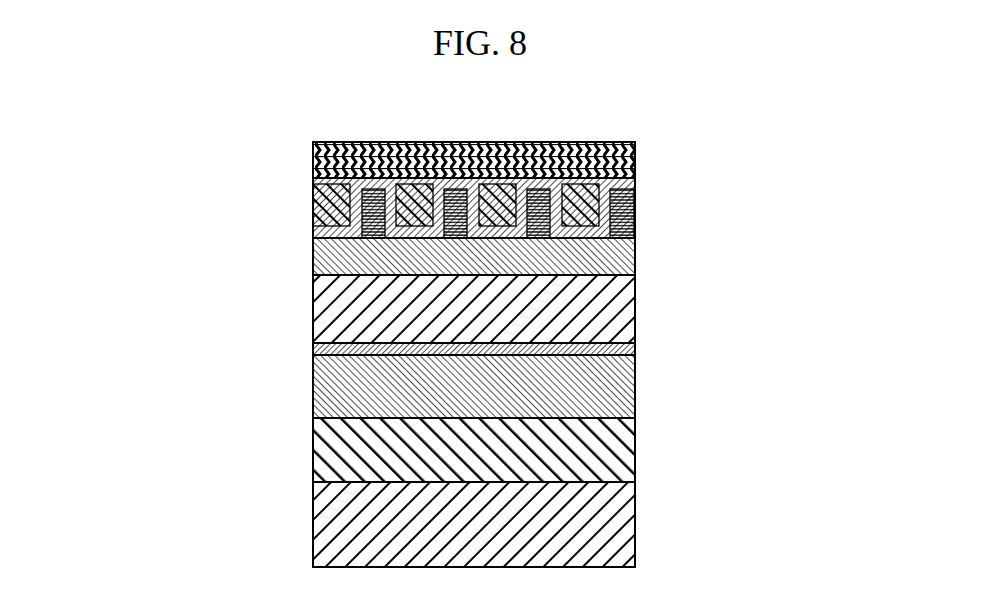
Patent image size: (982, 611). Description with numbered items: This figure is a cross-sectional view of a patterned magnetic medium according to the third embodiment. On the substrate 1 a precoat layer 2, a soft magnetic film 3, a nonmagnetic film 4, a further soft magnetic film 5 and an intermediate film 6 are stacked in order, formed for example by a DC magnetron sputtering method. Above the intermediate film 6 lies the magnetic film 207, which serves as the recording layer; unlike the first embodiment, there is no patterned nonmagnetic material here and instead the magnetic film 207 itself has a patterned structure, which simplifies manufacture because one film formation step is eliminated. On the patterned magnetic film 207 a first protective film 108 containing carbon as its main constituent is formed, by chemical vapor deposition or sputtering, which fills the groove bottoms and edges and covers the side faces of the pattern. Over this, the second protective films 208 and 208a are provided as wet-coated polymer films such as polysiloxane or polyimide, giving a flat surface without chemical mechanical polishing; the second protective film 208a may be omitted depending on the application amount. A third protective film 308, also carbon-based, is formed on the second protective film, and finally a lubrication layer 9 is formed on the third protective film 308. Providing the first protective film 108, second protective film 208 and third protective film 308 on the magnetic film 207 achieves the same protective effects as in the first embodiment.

The substrate 1 is at (605, 507).
The precoat layer 2 is at (617, 448).
The soft magnetic film 3 is at (522, 402).
The nonmagnetic film 4 is at (635, 347).
The soft magnetic film 5 is at (635, 312).
The intermediate film 6 is at (635, 263).
The magnetic film 207 is at (635, 225).
The second protective film 208 is at (328, 202).
The second protective film 208a is at (313, 176).
The first protective film 108 is at (635, 180).
The third protective film 308 is at (323, 142).
The lubrication layer 9 is at (622, 142).